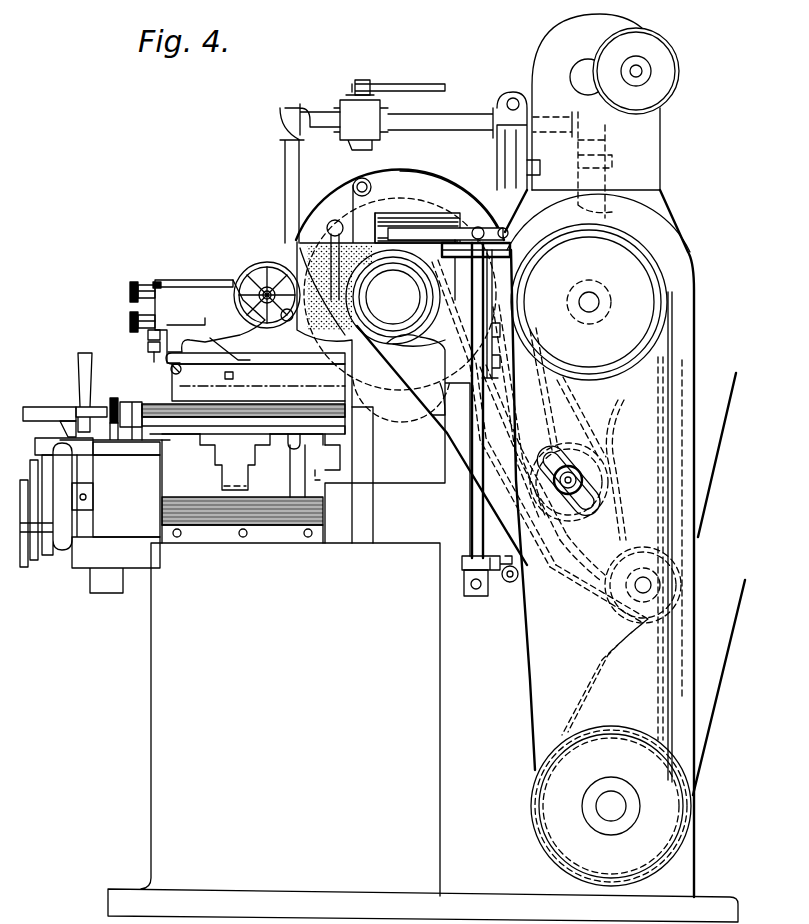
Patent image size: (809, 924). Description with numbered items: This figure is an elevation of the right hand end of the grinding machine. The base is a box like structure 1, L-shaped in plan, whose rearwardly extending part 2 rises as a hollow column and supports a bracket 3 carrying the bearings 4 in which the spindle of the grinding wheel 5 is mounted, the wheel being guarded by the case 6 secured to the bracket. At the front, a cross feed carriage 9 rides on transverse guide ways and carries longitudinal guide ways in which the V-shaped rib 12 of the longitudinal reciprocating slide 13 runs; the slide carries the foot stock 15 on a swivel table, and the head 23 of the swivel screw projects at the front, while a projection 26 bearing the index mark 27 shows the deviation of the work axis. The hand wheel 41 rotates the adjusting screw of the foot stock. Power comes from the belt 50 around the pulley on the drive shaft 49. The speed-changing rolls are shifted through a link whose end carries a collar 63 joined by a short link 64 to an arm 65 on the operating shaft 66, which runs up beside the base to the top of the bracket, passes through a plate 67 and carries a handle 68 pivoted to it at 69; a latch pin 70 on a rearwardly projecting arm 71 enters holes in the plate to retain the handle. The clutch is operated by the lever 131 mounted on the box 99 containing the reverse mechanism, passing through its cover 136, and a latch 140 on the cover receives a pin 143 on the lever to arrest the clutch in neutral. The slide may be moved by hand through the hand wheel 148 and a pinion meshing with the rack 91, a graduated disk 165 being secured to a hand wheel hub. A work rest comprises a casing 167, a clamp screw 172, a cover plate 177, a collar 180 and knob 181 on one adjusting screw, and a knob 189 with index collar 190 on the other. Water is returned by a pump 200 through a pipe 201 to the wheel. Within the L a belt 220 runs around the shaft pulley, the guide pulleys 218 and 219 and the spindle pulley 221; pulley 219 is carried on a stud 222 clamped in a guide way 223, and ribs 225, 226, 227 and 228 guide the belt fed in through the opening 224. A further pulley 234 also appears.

The box like structure 1 is at (163, 808).
The rearwardly extending part 2 is at (680, 244).
The bracket 3 is at (448, 316).
The bearings 4 is at (392, 330).
The grinding wheel 5 is at (322, 358).
The case 6 is at (437, 186).
The cross feed carriage 9 is at (242, 488).
The V-shaped rib 12 is at (338, 446).
The longitudinal reciprocating slide 13 is at (235, 462).
The foot stock 15 is at (216, 320).
The head 23 is at (112, 402).
The projection 26 is at (238, 378).
The index mark 27 is at (230, 380).
The hand wheel 41 is at (252, 262).
The drive shaft 49 is at (611, 809).
The belt 50 is at (710, 487).
The collar 63 is at (508, 583).
The short link 64 is at (524, 572).
The arm 65 is at (493, 558).
The operating shaft 66 is at (476, 528).
The plate 67 is at (522, 240).
The handle 68 is at (393, 228).
The pivot 69 is at (470, 228).
The latch pin 70 is at (512, 225).
The rearwardly projecting arm 71 is at (488, 226).
The rack 91 is at (240, 482).
The box 99 is at (36, 424).
The lever 131 is at (78, 358).
The cover 136 is at (104, 450).
The latch 140 is at (55, 414).
The pin 143 is at (77, 405).
The hand wheel 148 is at (62, 524).
The disk 165 is at (28, 565).
The casing 167 is at (180, 325).
The screw 172 is at (153, 355).
The cover plate 177 is at (196, 280).
The collar 180 is at (153, 282).
The knob 181 is at (129, 290).
The knob 189 is at (129, 320).
The index collar 190 is at (150, 338).
The pump 200 is at (440, 416).
The pipe 201 is at (600, 175).
The guide pulley 218 is at (632, 548).
The guide pulley 219 is at (583, 436).
The belt 220 is at (552, 383).
The pulley 221 is at (395, 330).
The stud 222 is at (588, 472).
The guide way 223 is at (585, 538).
The opening 224 is at (676, 590).
The rib 225 is at (560, 430).
The rib 226 is at (607, 482).
The rib 227 is at (575, 600).
The rib 228 is at (658, 400).
The pulley 234 is at (670, 66).